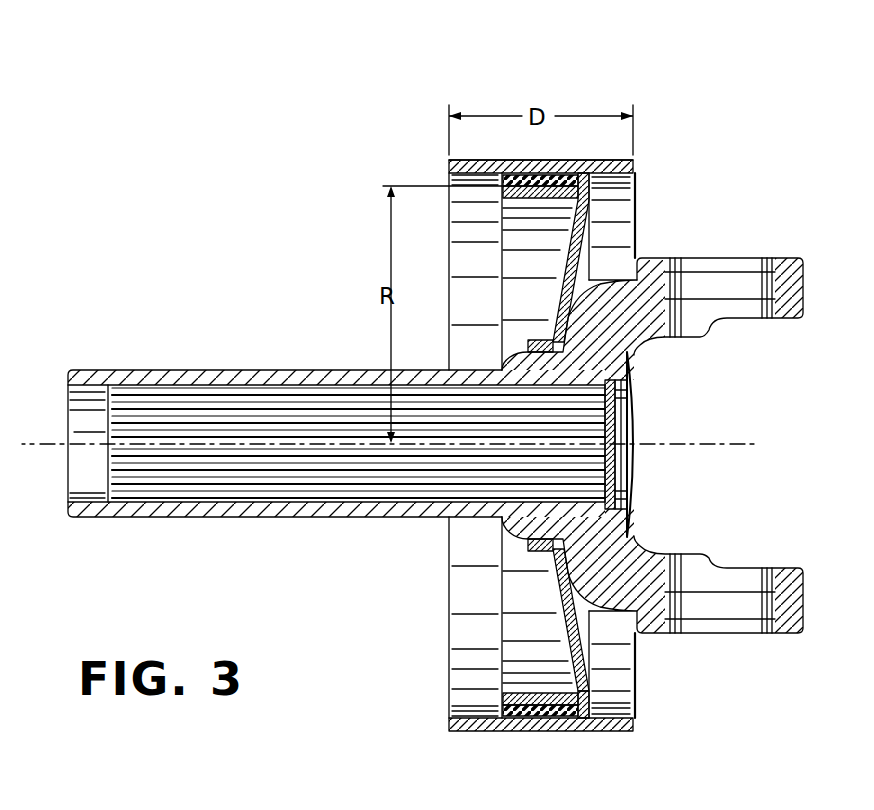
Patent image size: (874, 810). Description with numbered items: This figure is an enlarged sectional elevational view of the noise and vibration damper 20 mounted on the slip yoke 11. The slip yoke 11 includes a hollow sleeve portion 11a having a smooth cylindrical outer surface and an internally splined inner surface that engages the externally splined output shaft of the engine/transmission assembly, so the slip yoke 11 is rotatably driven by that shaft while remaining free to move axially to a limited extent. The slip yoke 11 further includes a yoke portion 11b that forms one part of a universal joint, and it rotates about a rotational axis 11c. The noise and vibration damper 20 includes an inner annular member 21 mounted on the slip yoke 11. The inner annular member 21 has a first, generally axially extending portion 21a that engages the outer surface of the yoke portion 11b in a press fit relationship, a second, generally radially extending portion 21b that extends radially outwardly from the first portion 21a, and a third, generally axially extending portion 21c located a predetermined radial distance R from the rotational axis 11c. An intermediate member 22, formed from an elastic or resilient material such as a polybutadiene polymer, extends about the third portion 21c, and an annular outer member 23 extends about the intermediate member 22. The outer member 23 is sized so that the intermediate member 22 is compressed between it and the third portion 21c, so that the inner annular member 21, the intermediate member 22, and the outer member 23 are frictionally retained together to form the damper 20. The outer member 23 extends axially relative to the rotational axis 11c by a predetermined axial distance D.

The slip yoke 11 is at (272, 349).
The hollow sleeve portion 11a is at (148, 376).
The yoke portion 11b is at (790, 260).
The rotational axis 11c is at (697, 442).
The noise and vibration damper 20 is at (421, 156).
The inner annular member 21 is at (541, 645).
The first, generally axially extending portion 21a is at (530, 548).
The second, generally radially extending portion 21b is at (573, 650).
The third, generally axially extending portion 21c is at (528, 690).
The intermediate member 22 is at (586, 181).
The annular outer member 23 is at (636, 170).